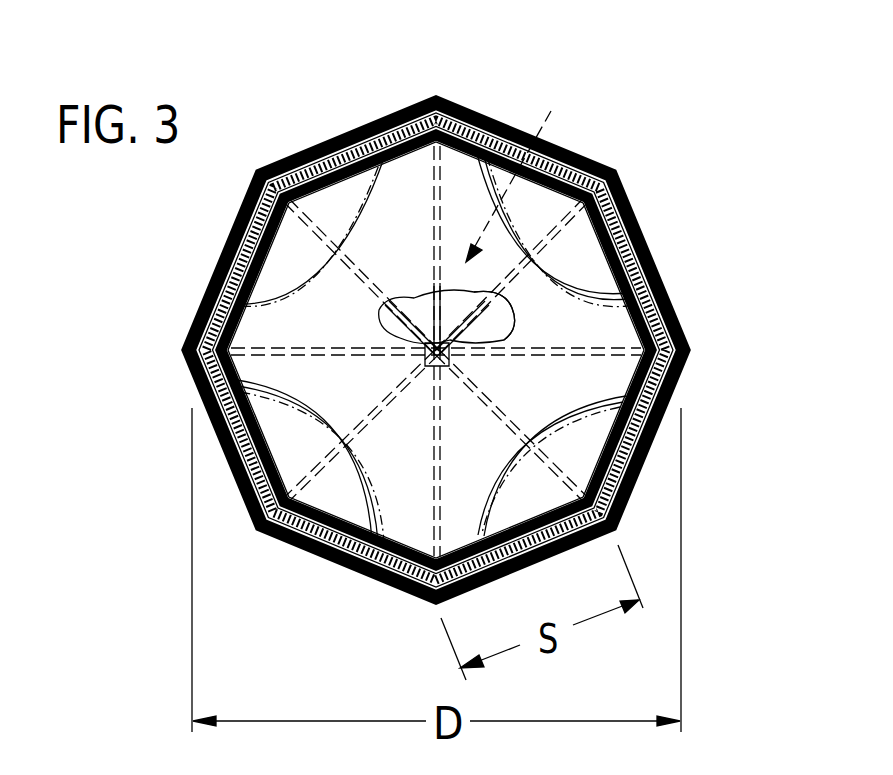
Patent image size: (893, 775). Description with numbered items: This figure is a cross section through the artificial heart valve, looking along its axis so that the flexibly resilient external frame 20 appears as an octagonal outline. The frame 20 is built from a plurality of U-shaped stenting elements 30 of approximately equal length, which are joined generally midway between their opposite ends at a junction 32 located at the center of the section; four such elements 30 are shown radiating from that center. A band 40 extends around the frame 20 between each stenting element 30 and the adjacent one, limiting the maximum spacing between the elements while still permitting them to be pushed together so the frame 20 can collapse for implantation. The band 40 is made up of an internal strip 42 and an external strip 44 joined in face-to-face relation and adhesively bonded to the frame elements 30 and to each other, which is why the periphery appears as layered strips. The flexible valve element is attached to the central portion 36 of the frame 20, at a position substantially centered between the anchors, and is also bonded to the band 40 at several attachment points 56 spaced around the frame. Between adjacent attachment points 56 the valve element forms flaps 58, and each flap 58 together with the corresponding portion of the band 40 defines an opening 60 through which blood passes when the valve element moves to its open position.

The external frame 20 is at (283, 404).
The U-shaped stenting elements 30 is at (538, 246).
The junction 32 is at (425, 360).
The central portion 36 is at (519, 166).
The band 40 is at (668, 244).
The internal strip 42 is at (592, 292).
The external strip 44 is at (633, 198).
The attachment points 56 is at (436, 96).
The flaps 58 is at (300, 284).
The opening 60 is at (342, 232).